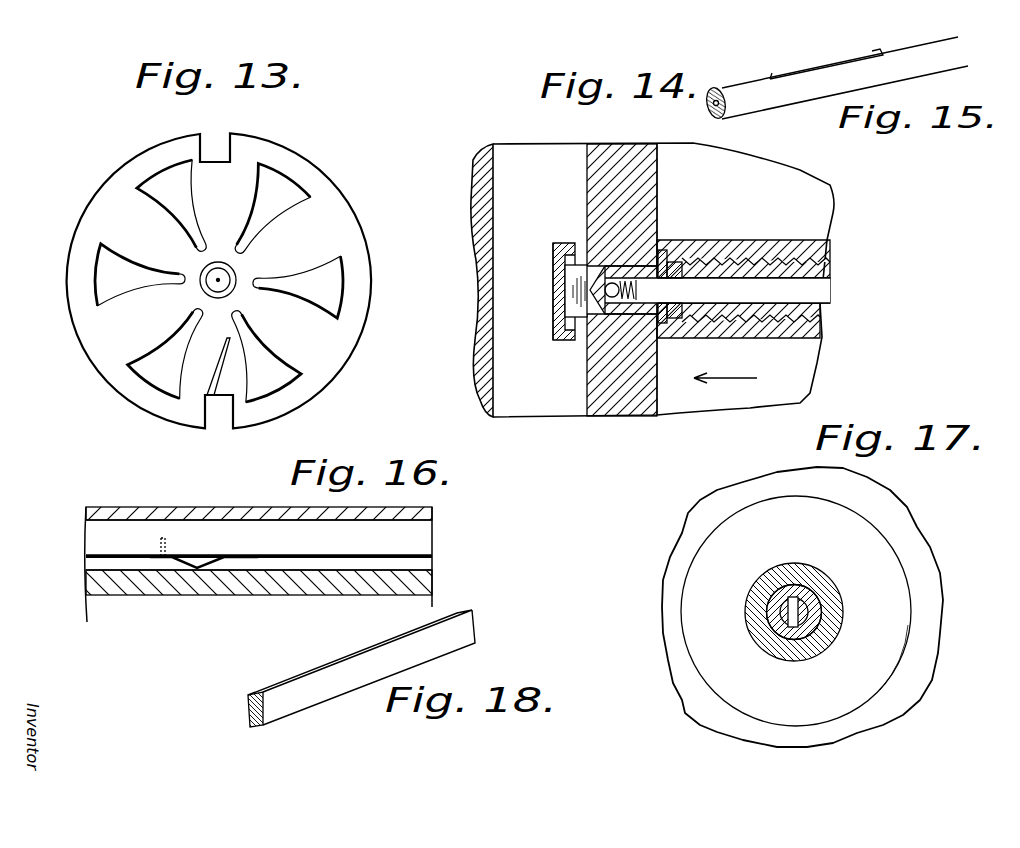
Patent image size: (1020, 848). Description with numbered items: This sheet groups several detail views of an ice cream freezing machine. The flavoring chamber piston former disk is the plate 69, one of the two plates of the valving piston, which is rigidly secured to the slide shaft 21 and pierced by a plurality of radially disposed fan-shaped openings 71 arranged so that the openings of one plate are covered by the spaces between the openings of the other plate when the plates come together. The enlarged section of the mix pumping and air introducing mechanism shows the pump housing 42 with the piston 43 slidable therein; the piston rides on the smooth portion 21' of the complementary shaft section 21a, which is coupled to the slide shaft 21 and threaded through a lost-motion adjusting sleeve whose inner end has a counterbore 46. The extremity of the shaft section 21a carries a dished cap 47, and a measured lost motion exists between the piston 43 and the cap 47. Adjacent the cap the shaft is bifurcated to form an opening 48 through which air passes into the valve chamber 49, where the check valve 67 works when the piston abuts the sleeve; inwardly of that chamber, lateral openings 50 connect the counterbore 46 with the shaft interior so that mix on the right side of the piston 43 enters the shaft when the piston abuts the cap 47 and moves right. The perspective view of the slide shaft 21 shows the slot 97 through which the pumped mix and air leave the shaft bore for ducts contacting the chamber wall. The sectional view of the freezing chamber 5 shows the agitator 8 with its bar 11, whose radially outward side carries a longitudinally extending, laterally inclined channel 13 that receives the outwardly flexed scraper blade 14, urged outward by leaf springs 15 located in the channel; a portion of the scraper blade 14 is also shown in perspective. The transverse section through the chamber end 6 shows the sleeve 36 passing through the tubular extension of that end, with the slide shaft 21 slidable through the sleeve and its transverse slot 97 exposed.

In FIG. 16, the cylindrical agitating and freezing chamber 5 is at (227, 507).
In FIG. 17, the chamber end 6 is at (895, 592).
In FIG. 16, the agitator 8 is at (243, 609).
In FIG. 16, the bar 11 is at (420, 577).
In FIG. 16, the channel 13 is at (418, 562).
In FIG. 16, the scraper blade 14 is at (418, 532).
In FIG. 18, the scraper blade 14 is at (327, 698).
In FIG. 16, the leaf springs 15 is at (200, 560).
In FIG. 15, the slide shaft 21 is at (836, 67).
In FIG. 17, the slide shaft 21 is at (820, 597).
In FIG. 14, the complementary section of the slide shaft 21a is at (697, 267).
In FIG. 14, the smooth portion of the shaft section 21' is at (681, 330).
In FIG. 17, the sleeve 36 is at (810, 627).
In FIG. 14, the pump housing 42 is at (800, 362).
In FIG. 14, the piston 43 is at (650, 180).
In FIG. 14, the counterbore 46 is at (660, 327).
In FIG. 14, the dished cap 47 is at (557, 307).
In FIG. 14, the opening 48 is at (580, 277).
In FIG. 14, the valve chamber 49 is at (593, 290).
In FIG. 14, the lateral openings 50 is at (670, 270).
In FIG. 14, the check valve 67 is at (545, 338).
In FIG. 13, the plate 69 is at (358, 278).
In FIG. 13, the fan-shaped openings 71 is at (333, 262).
In FIG. 15, the slot 97 is at (817, 72).
In FIG. 17, the slot 97 is at (800, 597).